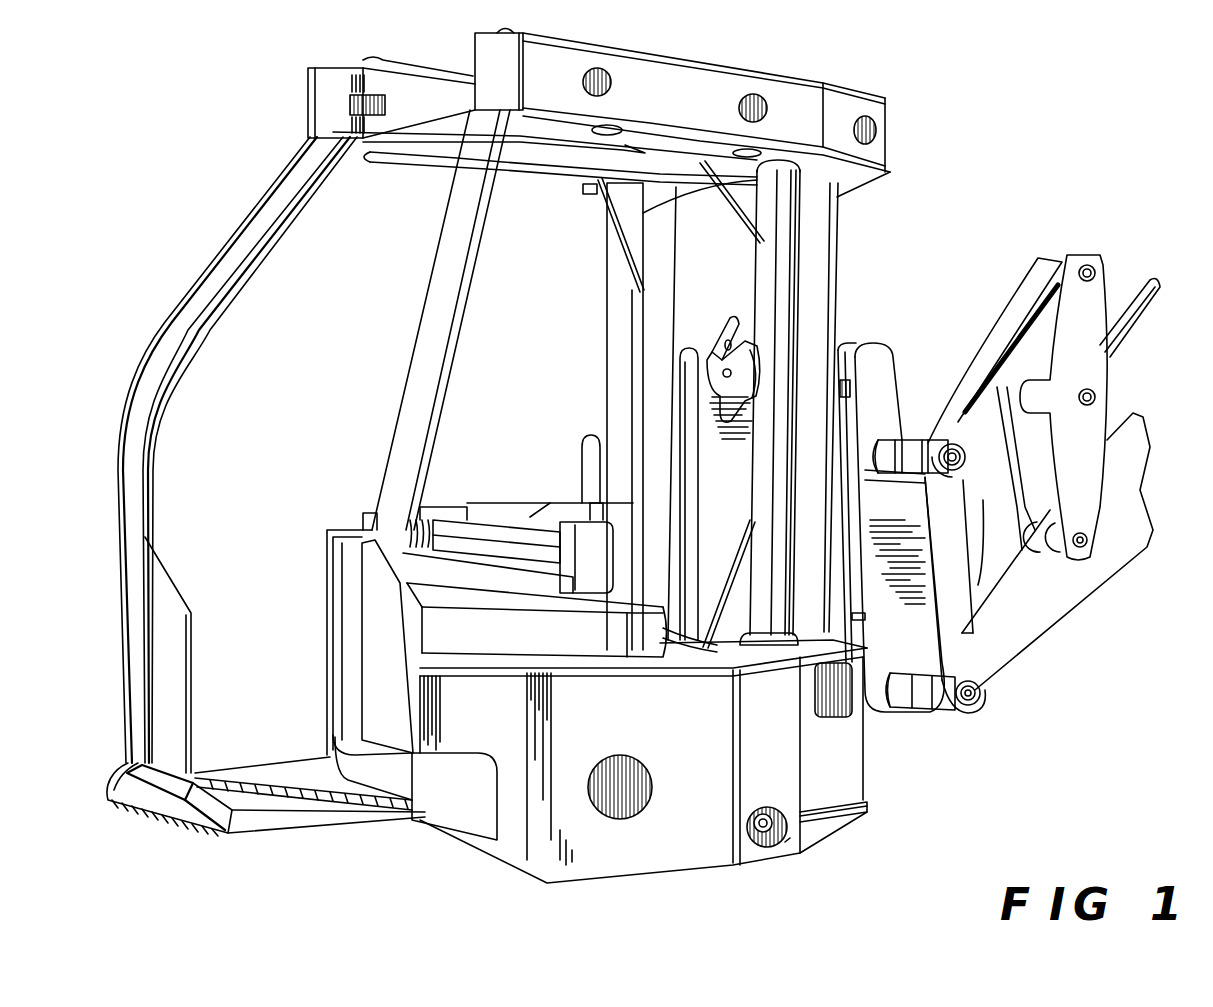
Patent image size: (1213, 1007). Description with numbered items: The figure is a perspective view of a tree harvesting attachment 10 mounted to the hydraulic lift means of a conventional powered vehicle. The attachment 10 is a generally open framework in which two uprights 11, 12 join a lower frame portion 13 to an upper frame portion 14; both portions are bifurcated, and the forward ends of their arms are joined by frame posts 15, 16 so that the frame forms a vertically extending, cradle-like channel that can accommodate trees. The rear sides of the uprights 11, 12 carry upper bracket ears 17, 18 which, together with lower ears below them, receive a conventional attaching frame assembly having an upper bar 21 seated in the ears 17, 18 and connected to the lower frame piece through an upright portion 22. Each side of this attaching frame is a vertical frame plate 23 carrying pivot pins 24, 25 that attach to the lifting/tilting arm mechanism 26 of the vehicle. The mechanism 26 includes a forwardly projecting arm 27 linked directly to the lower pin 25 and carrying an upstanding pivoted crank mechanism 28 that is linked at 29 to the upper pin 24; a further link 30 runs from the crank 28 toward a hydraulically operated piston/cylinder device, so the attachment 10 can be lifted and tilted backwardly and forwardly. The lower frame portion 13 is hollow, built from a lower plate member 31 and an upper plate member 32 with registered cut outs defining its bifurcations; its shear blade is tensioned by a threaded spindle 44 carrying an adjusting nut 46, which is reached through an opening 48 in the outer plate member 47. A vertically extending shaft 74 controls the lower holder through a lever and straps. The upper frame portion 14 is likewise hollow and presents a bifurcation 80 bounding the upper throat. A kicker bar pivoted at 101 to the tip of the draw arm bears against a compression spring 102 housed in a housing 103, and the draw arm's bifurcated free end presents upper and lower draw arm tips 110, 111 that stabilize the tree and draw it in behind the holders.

The tree harvesting attachment 10 is at (852, 232).
The upright 11 is at (617, 341).
The upright 12 is at (832, 291).
The lower frame portion 13 is at (866, 769).
The upper frame portion 14 is at (897, 121).
The frame post 15 is at (226, 268).
The frame post 16 is at (423, 318).
The upper bracket ear 17 is at (682, 320).
The upper bracket ear 18 is at (848, 326).
The upper bar 21 is at (689, 373).
The upright portion 22 is at (733, 494).
The vertical frame plate 23 is at (888, 379).
The upper pivot pin 24 is at (894, 446).
The lower pivot pin 25 is at (898, 707).
The lifting/tilting arm mechanism 26 is at (1108, 584).
The forwardly projecting arm 27 is at (1035, 622).
The crank mechanism 28 is at (1096, 428).
The link 29 is at (1011, 338).
The link 30 is at (1148, 296).
The lower plate member 31 is at (850, 815).
The upper plate member 32 is at (718, 658).
The threaded spindle 44 is at (762, 853).
The adjusting nut 46 is at (768, 806).
The outer plate member 47 is at (645, 848).
The opening 48 is at (784, 854).
The shaft 74 is at (772, 286).
The bifurcation 80 is at (473, 596).
The pivot 101 is at (586, 500).
The compression spring 102 is at (420, 515).
The housing 103 is at (441, 507).
The upper draw arm tip 110 is at (513, 577).
The lower draw arm tip 111 is at (398, 773).